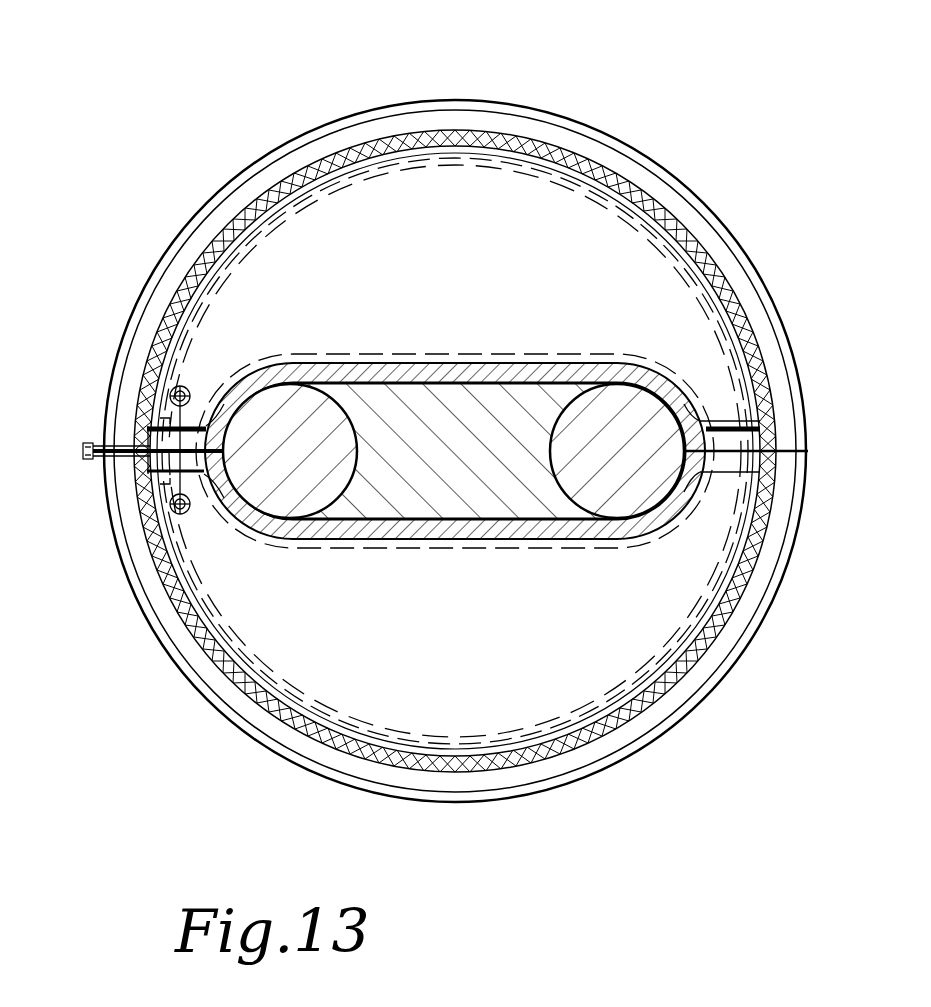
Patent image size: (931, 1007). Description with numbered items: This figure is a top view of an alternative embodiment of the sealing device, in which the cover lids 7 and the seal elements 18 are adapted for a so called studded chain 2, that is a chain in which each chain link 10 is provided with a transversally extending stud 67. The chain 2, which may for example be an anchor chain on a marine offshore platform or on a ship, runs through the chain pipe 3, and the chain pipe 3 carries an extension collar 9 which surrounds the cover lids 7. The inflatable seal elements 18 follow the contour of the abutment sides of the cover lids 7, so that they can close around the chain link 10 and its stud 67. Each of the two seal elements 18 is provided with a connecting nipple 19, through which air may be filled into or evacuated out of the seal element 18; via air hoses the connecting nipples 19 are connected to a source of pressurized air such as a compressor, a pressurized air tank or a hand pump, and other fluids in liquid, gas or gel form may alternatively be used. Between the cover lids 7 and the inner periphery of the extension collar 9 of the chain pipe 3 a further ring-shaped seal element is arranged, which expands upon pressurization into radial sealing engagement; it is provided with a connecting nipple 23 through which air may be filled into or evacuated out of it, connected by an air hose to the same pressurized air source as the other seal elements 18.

The chain 2 is at (520, 458).
The chain pipe 3 is at (556, 112).
The cover lids 7 is at (428, 281).
The extension collar 9 is at (350, 116).
The chain link 10 is at (580, 492).
The seal elements 18 is at (515, 368).
The connecting nipple 19 is at (178, 397).
The connecting nipple 23 is at (84, 451).
The stud 67 is at (385, 492).